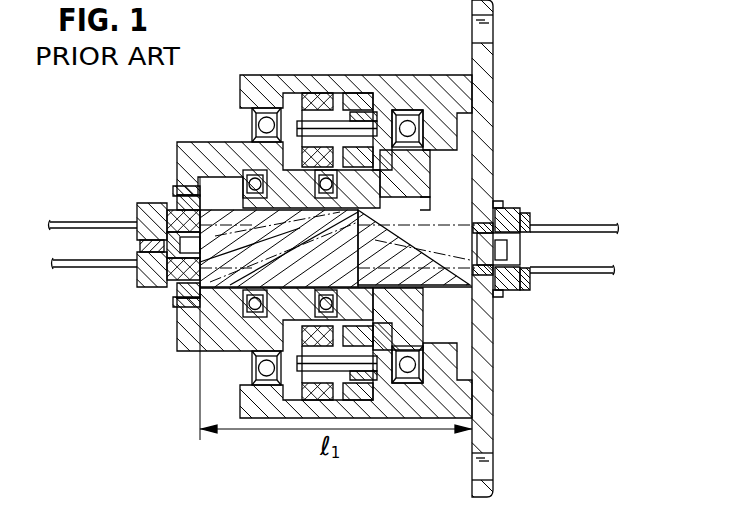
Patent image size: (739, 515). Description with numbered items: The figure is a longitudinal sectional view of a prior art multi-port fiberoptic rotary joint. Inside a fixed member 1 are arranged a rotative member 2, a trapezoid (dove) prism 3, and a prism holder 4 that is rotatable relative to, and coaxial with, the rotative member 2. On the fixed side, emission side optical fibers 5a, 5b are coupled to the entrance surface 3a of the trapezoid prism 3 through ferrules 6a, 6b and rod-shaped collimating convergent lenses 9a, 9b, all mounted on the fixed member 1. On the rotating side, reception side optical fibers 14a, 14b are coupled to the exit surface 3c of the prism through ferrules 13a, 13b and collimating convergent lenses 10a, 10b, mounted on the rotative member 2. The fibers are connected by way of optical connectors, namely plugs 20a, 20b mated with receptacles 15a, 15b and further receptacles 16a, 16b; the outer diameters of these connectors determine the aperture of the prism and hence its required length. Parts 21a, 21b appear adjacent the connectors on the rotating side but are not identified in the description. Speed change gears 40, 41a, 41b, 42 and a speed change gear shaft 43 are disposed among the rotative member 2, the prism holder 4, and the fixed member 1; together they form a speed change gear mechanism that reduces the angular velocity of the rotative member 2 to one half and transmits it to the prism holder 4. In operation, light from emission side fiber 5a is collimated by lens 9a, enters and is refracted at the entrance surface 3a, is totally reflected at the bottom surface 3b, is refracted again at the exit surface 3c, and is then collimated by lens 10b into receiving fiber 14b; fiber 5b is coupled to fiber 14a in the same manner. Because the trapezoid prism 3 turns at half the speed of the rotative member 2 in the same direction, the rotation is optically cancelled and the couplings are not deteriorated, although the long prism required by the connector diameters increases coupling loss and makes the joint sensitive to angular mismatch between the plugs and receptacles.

The fixed member 1 is at (493, 84).
The rotative member 2 is at (205, 142).
The trapezoid prism 3 is at (440, 188).
The entrance surface 3a is at (437, 247).
The bottom surface 3b is at (408, 302).
The exit surface 3c is at (250, 236).
The prism holder 4 is at (425, 92).
The emission side optical fiber 5a is at (610, 229).
The emission side optical fiber 5b is at (610, 274).
The ferrule 6a is at (531, 228).
The ferrule 6b is at (531, 286).
The rod-shaped collimating convergent lens 9a is at (499, 172).
The rod-shaped collimating convergent lens 9b is at (500, 318).
The collimating convergent lens 10a is at (168, 205).
The collimating convergent lens 10b is at (185, 352).
The ferrule 13a is at (142, 206).
The ferrule 13b is at (142, 284).
The reception side optical fiber 14a is at (55, 221).
The reception side optical fiber 14b is at (55, 268).
The receptacle 15a is at (495, 222).
The receptacle 15b is at (495, 277).
The receptacle 16a is at (175, 185).
The receptacle 16b is at (176, 308).
The plug 20a is at (528, 213).
The plug 20b is at (526, 292).
The bearing 21a is at (150, 208).
The bearing 21b is at (155, 285).
The speed change gear 40 is at (340, 112).
The speed change gear 41a is at (336, 122).
The speed change gear 41b is at (315, 92).
The speed change gear 42 is at (297, 77).
The speed change gear shaft 43 is at (365, 111).